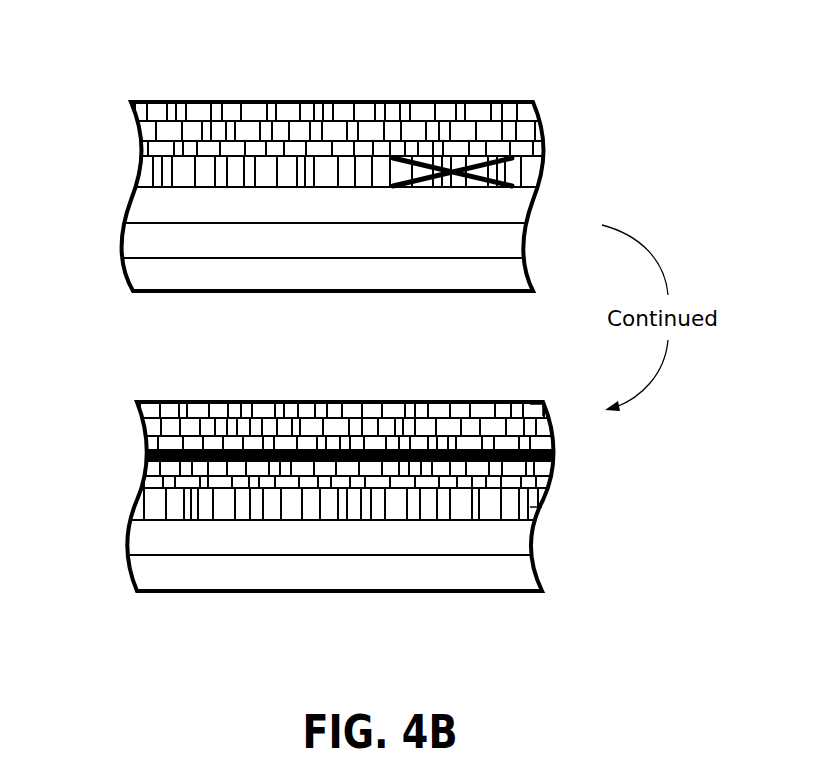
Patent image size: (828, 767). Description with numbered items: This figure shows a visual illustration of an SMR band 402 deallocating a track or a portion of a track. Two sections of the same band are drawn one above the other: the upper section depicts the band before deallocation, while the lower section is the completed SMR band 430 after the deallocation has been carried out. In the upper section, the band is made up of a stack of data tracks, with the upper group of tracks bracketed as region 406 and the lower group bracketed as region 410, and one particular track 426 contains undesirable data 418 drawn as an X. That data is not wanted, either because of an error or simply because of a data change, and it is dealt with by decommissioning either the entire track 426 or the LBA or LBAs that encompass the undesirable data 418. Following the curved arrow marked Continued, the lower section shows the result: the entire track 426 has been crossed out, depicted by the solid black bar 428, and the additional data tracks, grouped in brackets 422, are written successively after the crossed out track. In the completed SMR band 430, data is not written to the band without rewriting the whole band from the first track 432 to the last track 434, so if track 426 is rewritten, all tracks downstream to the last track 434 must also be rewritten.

The SMR band 402 is at (180, 100).
The upper layer region 406 is at (112, 100).
The lower layer region 410 is at (112, 222).
The undesirable data 418 is at (461, 148).
The track 426 is at (553, 155).
The crossed out track 428 is at (331, 440).
The completed SMR band 430 is at (158, 402).
The first track 432 is at (556, 405).
The last track 434 is at (553, 508).
The layer group 422 is at (118, 590).